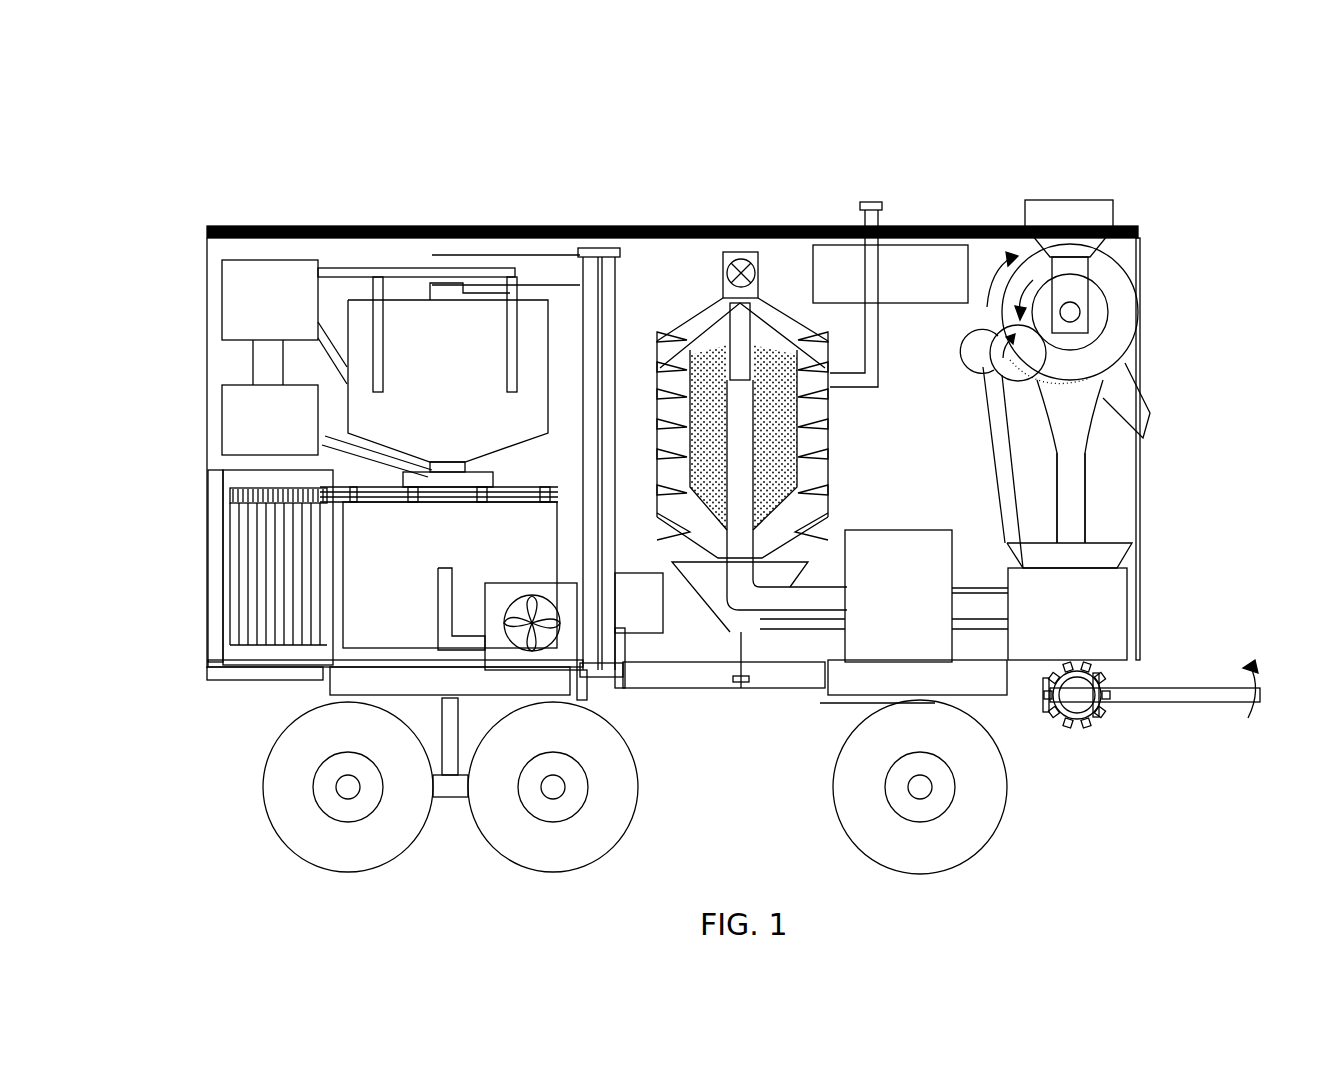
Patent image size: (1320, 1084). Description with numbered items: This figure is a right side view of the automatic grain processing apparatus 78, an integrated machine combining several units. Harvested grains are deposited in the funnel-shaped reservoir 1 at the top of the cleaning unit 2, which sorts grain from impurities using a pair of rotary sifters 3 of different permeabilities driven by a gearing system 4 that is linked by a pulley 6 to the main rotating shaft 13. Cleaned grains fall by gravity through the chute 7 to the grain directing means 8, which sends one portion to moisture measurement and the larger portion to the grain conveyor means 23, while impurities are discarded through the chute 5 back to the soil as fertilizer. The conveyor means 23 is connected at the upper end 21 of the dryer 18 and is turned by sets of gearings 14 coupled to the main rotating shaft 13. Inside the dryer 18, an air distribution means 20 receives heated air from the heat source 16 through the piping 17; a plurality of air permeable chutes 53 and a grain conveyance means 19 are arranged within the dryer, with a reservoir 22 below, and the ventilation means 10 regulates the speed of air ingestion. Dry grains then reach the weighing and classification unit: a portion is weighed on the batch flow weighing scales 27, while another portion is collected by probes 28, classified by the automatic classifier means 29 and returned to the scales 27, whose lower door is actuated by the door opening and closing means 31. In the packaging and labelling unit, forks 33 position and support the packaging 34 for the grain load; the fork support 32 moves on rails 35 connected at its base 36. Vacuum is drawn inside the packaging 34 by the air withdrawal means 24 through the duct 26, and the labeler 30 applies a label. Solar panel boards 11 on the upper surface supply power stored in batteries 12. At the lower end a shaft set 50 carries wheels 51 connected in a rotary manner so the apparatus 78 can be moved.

The reservoir 1 is at (1067, 200).
The cleaning unit 2 is at (1117, 275).
The rotary sifters 3 is at (1117, 372).
The gearing system 4 is at (1000, 370).
The chute 5 is at (1140, 412).
The pulley 6 is at (1012, 525).
The chute 7 is at (1087, 527).
The grain directing means 8 is at (1127, 553).
The ventilation means 10 is at (1078, 626).
The solar panel boards 11 is at (948, 226).
The batteries 12 is at (900, 245).
The main rotating shaft 13 is at (1160, 690).
The sets of gearings 14 is at (741, 690).
The heat source 16 is at (910, 612).
The piping 17 is at (748, 608).
The dryer 18 is at (765, 330).
The grain conveyance means 19 is at (752, 345).
The air distribution means 20 is at (700, 332).
The upper end 21 is at (740, 310).
The reservoir 22 is at (718, 605).
The grain conveyor means 23 is at (600, 250).
The air withdrawal means 24 is at (450, 800).
The duct 26 is at (438, 620).
The batch flow weighing scales 27 is at (520, 292).
The probes 28 is at (343, 270).
The automatic classifier means 29 is at (281, 309).
The labeler 30 is at (276, 432).
The door opening and closing means 31 is at (383, 450).
The fork support 32 is at (208, 510).
The forks 33 is at (320, 488).
The packaging 34 is at (223, 558).
The rails 35 is at (207, 680).
The base 36 is at (207, 672).
The shaft set 50 is at (493, 667).
The wheels 51 is at (300, 857).
The air permeable chutes 53 is at (677, 327).
The automatic grain processing apparatus 78 is at (729, 133).